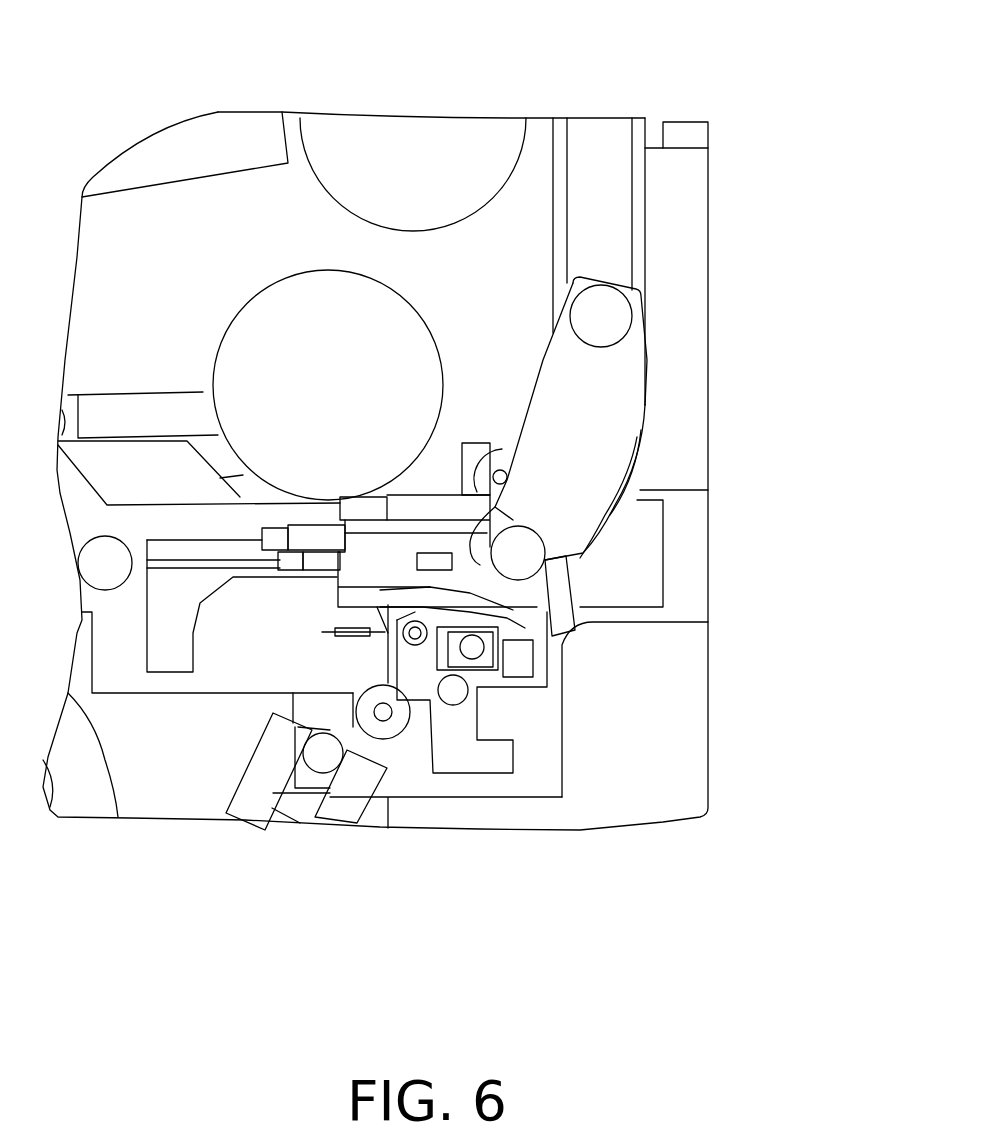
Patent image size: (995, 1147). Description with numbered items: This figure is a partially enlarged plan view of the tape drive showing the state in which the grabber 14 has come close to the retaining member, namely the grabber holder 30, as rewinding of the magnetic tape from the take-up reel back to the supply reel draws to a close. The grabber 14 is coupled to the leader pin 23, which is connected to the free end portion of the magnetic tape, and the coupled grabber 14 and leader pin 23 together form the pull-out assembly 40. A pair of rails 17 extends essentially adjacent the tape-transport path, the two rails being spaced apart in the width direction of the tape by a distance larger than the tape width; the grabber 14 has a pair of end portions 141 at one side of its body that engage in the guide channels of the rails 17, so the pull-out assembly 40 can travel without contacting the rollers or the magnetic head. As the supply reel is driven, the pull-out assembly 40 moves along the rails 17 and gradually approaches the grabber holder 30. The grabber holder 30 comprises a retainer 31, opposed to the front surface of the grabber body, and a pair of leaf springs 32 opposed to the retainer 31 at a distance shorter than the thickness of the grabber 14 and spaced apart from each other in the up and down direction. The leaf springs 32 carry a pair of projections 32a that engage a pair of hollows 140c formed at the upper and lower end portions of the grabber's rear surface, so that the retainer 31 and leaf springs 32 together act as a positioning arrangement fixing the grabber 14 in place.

The grabber 14 is at (625, 355).
The rails 17 is at (553, 217).
The end portions 141 is at (595, 312).
The pull-out assembly 40 is at (620, 398).
The hollows 140c is at (640, 468).
The retainer 31 is at (358, 497).
The leaf springs 32 is at (332, 636).
The projections 32a is at (347, 628).
The leader pin 23 is at (523, 557).
The grabber holder 30 is at (527, 700).